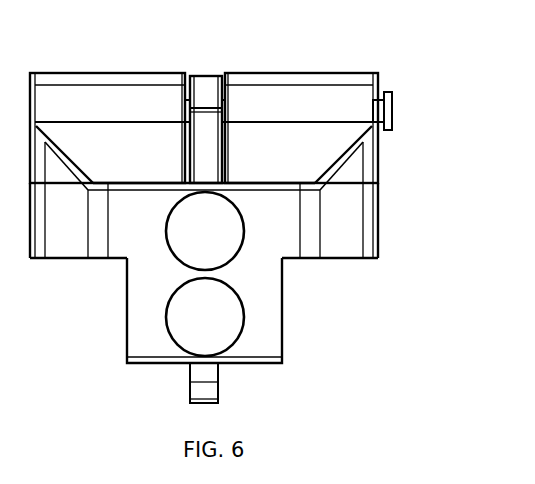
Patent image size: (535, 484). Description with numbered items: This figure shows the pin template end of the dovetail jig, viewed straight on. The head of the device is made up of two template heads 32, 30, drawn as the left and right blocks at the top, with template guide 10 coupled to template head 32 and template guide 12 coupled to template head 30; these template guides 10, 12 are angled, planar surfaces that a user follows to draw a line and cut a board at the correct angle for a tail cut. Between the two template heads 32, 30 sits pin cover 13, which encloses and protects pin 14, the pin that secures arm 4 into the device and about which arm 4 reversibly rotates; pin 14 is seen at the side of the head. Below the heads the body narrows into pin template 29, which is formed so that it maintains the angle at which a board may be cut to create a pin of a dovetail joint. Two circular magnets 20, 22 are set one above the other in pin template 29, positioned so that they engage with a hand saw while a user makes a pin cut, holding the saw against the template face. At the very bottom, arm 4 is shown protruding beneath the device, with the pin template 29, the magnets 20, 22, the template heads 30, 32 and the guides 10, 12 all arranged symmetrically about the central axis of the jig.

The arm 4 is at (228, 387).
The template guide 10 is at (88, 64).
The template guide 12 is at (298, 64).
The pin cover 13 is at (205, 66).
The pin 14 is at (403, 110).
The magnet 20 is at (205, 231).
The magnet 22 is at (205, 317).
The pin template 29 is at (204, 244).
The template head 30 is at (319, 174).
The template head 32 is at (88, 174).